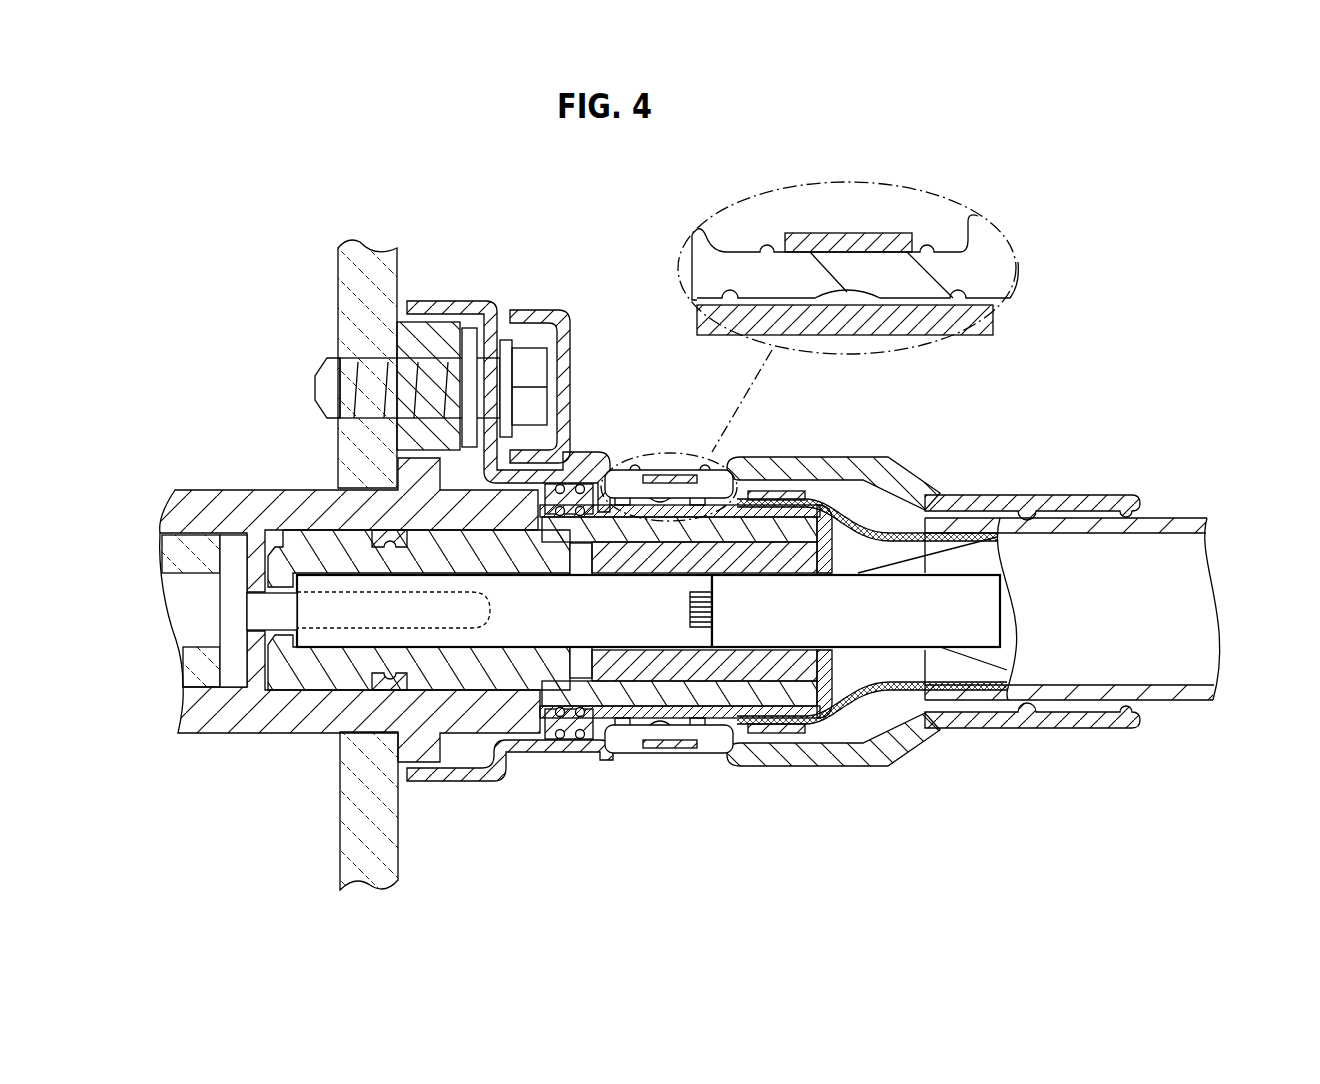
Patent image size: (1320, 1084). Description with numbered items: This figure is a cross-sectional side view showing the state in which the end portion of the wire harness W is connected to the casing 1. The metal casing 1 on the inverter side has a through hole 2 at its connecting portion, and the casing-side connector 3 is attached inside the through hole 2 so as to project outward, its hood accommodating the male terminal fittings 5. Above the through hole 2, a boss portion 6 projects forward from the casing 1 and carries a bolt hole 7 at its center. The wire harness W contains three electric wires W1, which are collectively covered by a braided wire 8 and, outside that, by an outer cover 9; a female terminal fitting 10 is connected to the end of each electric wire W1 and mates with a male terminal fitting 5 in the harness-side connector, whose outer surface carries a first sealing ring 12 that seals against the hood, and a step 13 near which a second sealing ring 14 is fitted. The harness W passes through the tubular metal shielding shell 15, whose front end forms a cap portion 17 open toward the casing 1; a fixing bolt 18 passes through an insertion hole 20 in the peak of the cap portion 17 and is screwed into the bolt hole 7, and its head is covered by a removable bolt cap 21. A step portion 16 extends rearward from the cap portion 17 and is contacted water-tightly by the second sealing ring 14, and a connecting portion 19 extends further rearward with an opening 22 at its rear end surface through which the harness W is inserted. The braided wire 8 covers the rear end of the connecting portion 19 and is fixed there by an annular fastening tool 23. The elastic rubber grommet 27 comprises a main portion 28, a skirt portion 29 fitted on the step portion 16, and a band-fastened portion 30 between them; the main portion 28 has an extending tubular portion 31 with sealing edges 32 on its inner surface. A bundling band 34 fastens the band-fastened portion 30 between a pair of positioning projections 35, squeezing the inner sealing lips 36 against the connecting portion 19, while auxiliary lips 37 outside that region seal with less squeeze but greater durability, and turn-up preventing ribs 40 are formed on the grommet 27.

The casing 1 is at (336, 848).
The through hole 2 is at (352, 497).
The casing-side connector 3 is at (250, 722).
The male terminal fitting 5 is at (282, 612).
The boss portion 6 is at (425, 332).
The bolt hole 7 is at (336, 372).
The braided wire 8 is at (940, 635).
The outer cover 9 is at (1088, 500).
The female terminal fitting 10 is at (490, 632).
The first sealing ring 12 is at (380, 688).
The step 13 is at (553, 692).
The second sealing ring 14 is at (568, 740).
The shielding shell 15 is at (496, 296).
The step portion 16 is at (588, 468).
The cap portion 17 is at (443, 300).
The fixing bolt 18 is at (407, 365).
The connecting portion 19 is at (772, 505).
The insertion hole 20 is at (470, 370).
The bolt cap 21 is at (565, 318).
The opening 22 is at (822, 555).
The annular fastening tool 23 is at (752, 724).
The grommet 27 is at (1028, 440).
The main portion 28 is at (833, 752).
The skirt portion 29 is at (606, 754).
The band-fastened portion 30 is at (748, 262).
The extending tubular portion 31 is at (1008, 732).
The sealing edge 32 is at (1127, 730).
The bundling band 34 is at (845, 233).
The positioning projection 35 is at (768, 246).
The sealing lip 36 is at (877, 300).
The auxiliary lip 37 is at (727, 297).
The turn-up preventing rib 40 is at (607, 474).
The wire harness W is at (1182, 578).
The electric wire W1 is at (942, 642).